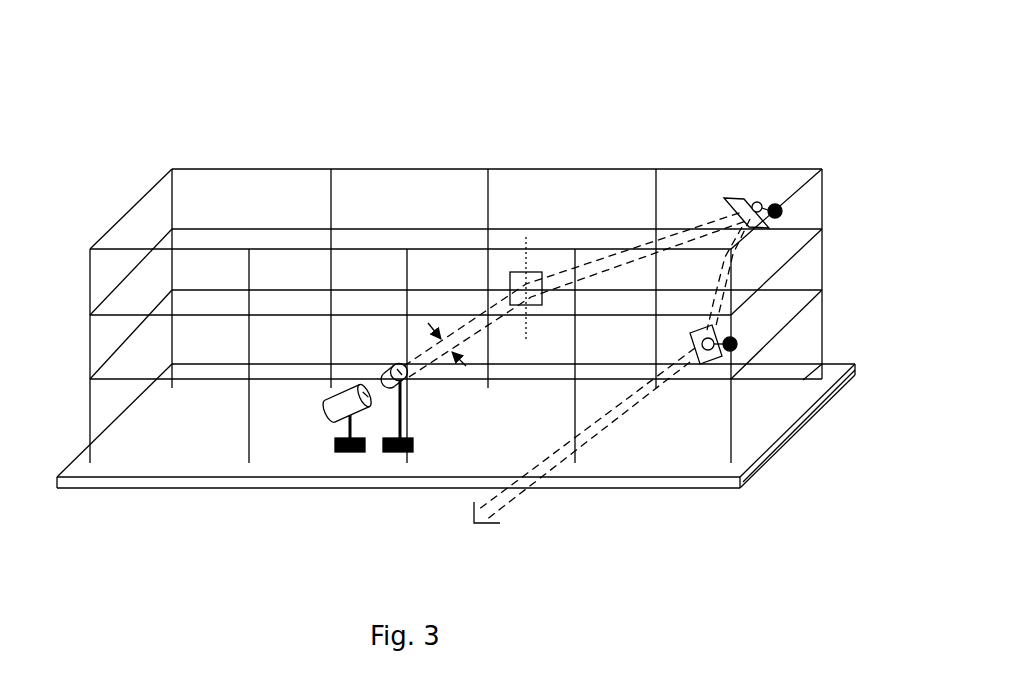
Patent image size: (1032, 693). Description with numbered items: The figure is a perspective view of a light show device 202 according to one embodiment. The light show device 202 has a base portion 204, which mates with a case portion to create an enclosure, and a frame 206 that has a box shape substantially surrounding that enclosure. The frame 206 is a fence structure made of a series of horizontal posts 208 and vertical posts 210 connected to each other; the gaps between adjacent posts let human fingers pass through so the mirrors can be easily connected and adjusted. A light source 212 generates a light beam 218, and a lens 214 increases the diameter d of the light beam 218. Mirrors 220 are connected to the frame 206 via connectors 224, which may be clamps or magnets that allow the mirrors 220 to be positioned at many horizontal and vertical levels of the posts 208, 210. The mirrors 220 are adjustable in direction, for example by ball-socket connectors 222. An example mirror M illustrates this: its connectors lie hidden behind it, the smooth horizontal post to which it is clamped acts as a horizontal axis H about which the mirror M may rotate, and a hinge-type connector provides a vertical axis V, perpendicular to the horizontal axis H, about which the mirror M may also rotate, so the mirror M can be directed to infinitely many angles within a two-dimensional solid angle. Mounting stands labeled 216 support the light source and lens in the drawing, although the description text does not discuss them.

The light show device 202 is at (198, 117).
The base portion 204 is at (205, 489).
The frame 206 is at (377, 165).
The horizontal posts 208 is at (448, 227).
The vertical posts 210 is at (657, 188).
The light source 212 is at (343, 410).
The lens 214 is at (405, 395).
The mounting stands 216 is at (388, 452).
The light beam 218 is at (513, 498).
The mirrors 220 is at (799, 224).
The ball-socket connectors 222 is at (762, 210).
The connectors 224 is at (780, 208).
The horizontal axis H is at (203, 288).
The example mirror M is at (510, 277).
The vertical axis V is at (527, 267).
The diameter d is at (575, 294).